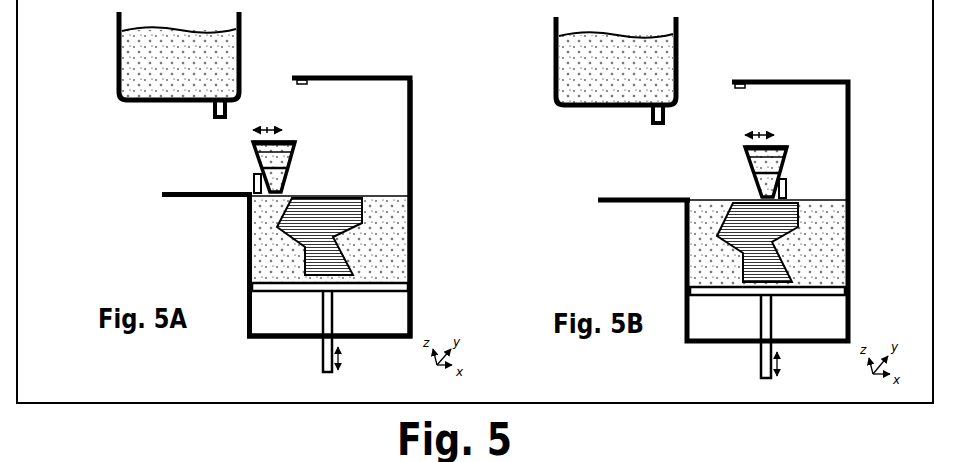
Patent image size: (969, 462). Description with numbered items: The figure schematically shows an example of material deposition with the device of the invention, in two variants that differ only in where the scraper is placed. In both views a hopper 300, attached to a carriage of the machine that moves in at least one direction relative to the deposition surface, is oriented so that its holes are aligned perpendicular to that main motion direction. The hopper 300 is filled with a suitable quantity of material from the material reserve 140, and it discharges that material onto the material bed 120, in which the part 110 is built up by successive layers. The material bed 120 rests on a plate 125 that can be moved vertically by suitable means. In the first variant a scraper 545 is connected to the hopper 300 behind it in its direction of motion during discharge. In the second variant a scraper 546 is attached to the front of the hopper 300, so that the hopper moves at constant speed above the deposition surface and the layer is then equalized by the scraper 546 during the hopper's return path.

In FIG. 5A, the part 110 is at (292, 236).
In FIG. 5B, the part 110 is at (733, 228).
In FIG. 5A, the material bed 120 is at (388, 229).
In FIG. 5A, the plate 125 is at (370, 290).
In FIG. 5B, the plate 125 is at (810, 295).
In FIG. 5A, the material reserve 140 is at (117, 59).
In FIG. 5B, the material reserve 140 is at (554, 62).
In FIG. 5A, the hopper 300 is at (293, 155).
In FIG. 5B, the hopper 300 is at (745, 157).
In FIG. 5A, the scraper 545 is at (254, 182).
In FIG. 5B, the scraper 546 is at (787, 188).